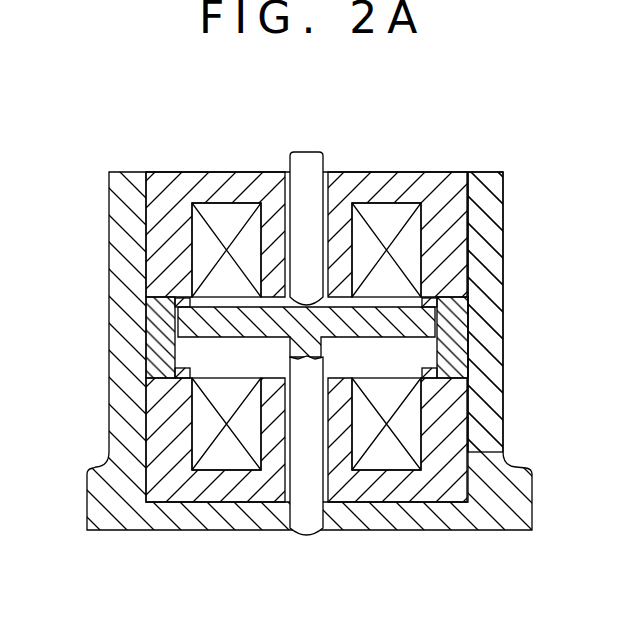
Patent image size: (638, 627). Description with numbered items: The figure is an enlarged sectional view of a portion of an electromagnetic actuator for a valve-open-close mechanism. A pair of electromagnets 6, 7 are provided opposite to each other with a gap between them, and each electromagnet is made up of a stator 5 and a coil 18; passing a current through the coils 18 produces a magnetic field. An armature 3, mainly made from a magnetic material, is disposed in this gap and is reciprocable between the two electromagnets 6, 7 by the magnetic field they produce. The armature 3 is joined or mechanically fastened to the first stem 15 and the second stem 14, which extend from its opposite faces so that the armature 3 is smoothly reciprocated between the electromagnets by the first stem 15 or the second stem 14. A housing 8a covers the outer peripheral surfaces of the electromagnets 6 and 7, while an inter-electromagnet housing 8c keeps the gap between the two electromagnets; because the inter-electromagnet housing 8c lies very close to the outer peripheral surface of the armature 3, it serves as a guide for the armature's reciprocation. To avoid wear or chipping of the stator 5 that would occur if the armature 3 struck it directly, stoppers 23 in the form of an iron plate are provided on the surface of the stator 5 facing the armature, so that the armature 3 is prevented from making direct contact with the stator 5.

The armature 3 is at (192, 323).
The stator 5 is at (450, 230).
The electromagnet 6 is at (157, 216).
The electromagnet 7 is at (157, 468).
The housing 8a is at (488, 302).
The inter-electromagnet housing 8c is at (458, 350).
The second stem 14 is at (310, 172).
The first stem 15 is at (312, 512).
The coil 18 is at (407, 428).
The stopper 23 is at (178, 300).